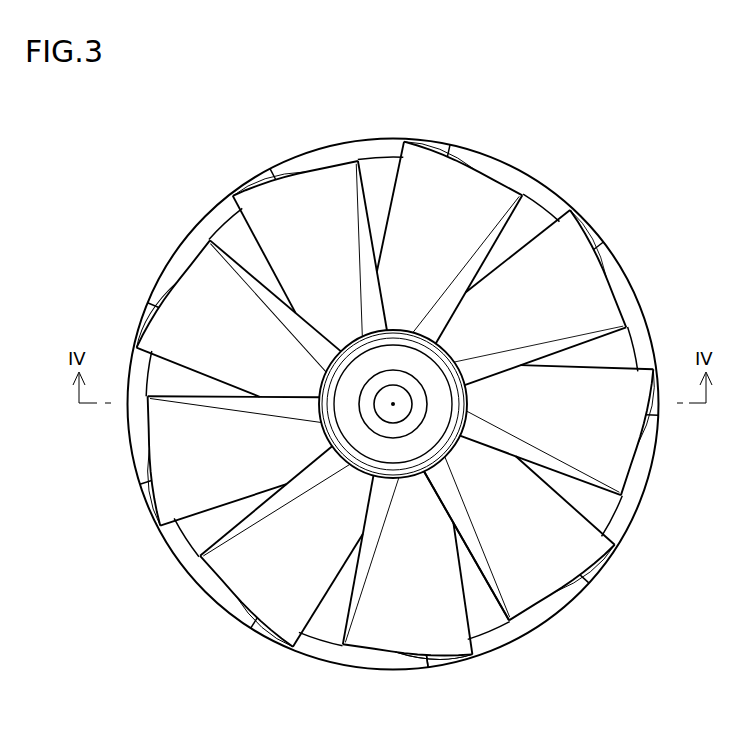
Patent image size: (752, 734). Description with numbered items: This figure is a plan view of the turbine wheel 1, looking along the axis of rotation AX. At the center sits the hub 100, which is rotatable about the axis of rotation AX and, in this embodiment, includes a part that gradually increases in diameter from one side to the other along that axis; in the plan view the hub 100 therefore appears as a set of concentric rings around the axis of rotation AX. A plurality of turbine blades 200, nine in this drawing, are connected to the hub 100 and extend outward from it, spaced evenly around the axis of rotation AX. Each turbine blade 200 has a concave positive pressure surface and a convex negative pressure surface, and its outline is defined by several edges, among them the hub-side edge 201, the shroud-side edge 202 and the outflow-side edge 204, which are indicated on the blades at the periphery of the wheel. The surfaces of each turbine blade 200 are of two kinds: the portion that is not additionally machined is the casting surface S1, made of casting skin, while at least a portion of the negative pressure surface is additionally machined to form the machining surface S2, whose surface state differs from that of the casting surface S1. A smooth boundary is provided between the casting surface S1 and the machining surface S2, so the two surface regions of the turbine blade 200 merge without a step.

The turbine wheel 1 is at (222, 151).
The hub 100 is at (545, 183).
The turbine blade 200 is at (605, 278).
The hub-side edge 201 is at (427, 657).
The shroud-side edge 202 is at (463, 653).
The outflow-side edge 204 is at (338, 633).
The axis of rotation AX is at (393, 404).
The casting surface S1 is at (594, 565).
The machining surface S2 is at (257, 563).